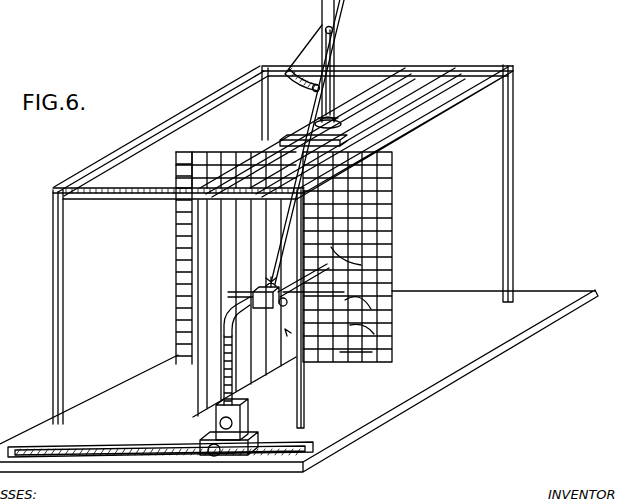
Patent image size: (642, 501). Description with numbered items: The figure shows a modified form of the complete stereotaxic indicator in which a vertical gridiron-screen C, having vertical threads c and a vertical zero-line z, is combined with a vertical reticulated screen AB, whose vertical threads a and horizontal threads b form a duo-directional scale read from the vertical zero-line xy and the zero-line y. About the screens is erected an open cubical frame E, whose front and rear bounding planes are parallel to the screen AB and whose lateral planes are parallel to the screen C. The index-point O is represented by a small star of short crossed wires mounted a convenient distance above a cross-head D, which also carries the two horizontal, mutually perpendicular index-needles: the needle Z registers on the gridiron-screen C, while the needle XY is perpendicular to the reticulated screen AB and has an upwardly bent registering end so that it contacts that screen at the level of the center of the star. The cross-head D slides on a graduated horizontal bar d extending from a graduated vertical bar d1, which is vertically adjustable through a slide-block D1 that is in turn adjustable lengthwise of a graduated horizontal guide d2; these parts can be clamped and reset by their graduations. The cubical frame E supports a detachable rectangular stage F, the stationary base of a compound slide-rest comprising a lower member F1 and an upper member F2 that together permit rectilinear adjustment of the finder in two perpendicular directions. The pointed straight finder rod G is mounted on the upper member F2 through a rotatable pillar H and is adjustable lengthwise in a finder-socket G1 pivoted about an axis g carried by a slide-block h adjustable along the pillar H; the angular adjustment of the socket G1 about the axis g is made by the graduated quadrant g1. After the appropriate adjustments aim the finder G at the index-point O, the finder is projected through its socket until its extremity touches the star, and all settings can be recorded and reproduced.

The rectangular stage F is at (77, 183).
The lower member of compound slide-rest F1 is at (423, 64).
The upper member of compound slide-rest F2 is at (297, 137).
The cubical frame E is at (501, 113).
The graduated quadrant g1 is at (262, 100).
The finder-socket G1 is at (317, 60).
The finder G is at (287, 234).
The axis g is at (336, 30).
The slide-block h is at (322, 28).
The pillar H is at (333, 118).
The reticulated screen AB is at (396, 205).
The index-needle XY is at (361, 265).
The index-point O is at (269, 281).
The vertical zero-line z is at (251, 298).
The vertical threads c is at (224, 335).
The graduated horizontal bar d is at (225, 338).
The gridiron-screen C is at (197, 396).
The cross-head D is at (266, 372).
The graduated vertical bar d1 is at (234, 372).
The slide-block D1 is at (233, 444).
The graduated horizontal guide d2 is at (112, 453).
The vertical zero-line xy is at (287, 331).
The zero-line y is at (361, 370).
The vertical threads a is at (374, 334).
The horizontal threads b is at (371, 309).